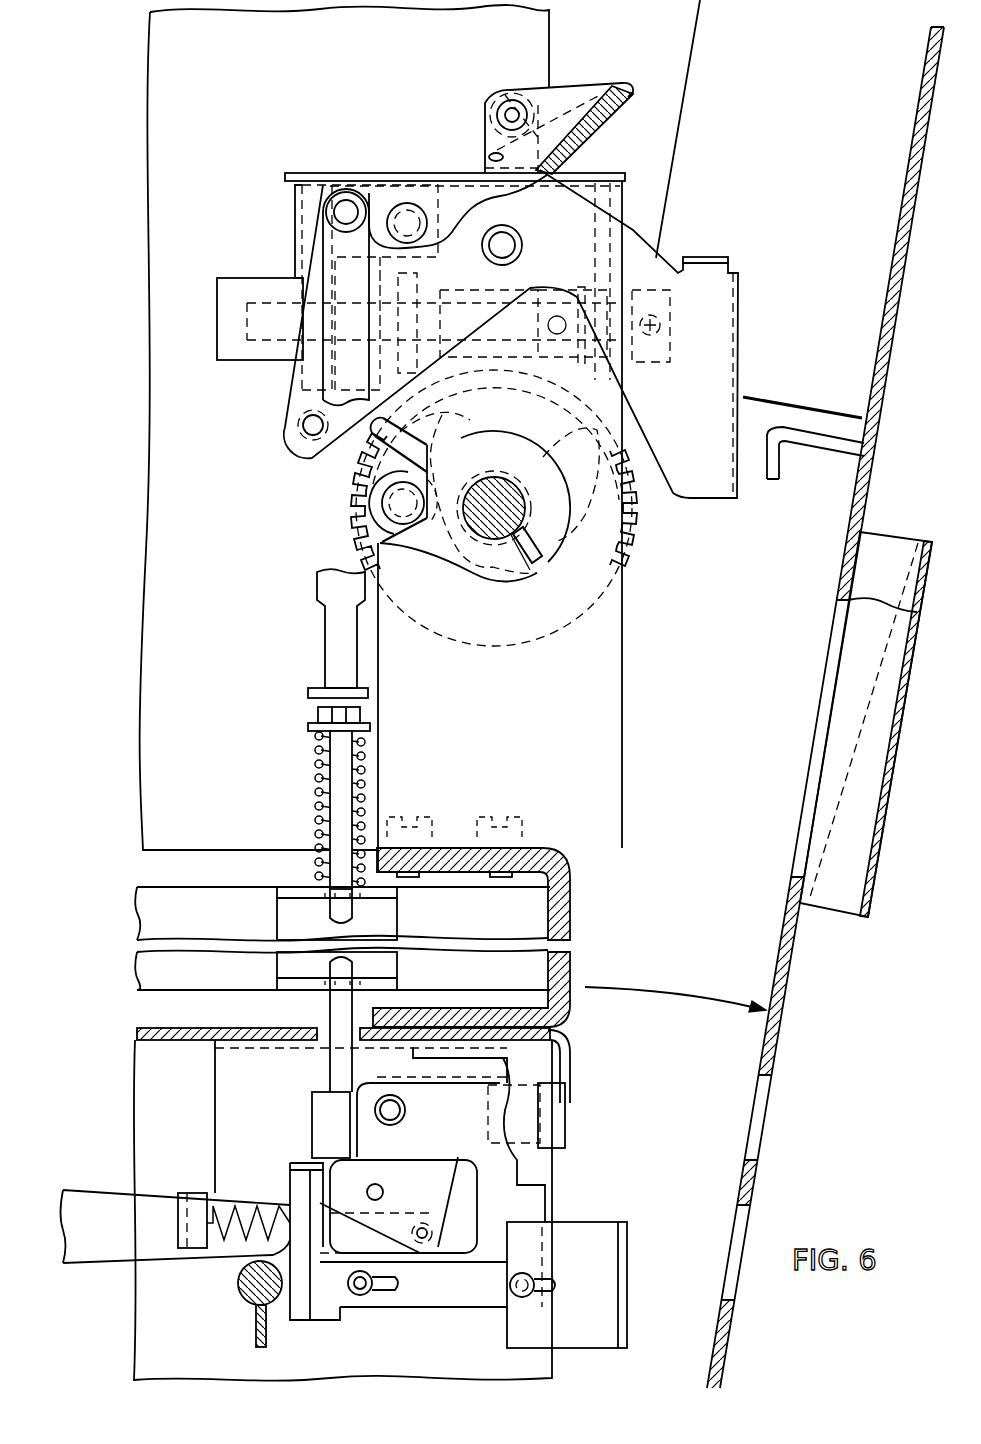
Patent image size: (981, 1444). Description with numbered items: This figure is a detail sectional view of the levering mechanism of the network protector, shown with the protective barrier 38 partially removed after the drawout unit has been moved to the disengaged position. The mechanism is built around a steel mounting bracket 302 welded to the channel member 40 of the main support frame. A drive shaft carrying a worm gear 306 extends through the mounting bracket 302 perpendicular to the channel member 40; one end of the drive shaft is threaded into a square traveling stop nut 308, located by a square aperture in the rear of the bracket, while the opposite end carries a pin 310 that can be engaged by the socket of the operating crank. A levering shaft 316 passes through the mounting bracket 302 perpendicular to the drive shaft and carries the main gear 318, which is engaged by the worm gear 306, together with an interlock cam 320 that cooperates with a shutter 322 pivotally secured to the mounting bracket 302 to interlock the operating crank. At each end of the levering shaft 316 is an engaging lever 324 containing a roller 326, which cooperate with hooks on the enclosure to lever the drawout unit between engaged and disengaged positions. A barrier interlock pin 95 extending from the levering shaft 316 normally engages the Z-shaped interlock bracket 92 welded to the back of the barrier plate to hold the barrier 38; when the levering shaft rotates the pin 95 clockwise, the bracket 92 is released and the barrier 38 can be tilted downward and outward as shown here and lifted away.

The protective barrier 38 is at (870, 494).
The channel member 40 is at (572, 908).
The interlock bracket 92 is at (814, 412).
The barrier interlock pin 95 is at (530, 575).
The mounting bracket 302 is at (626, 173).
The worm gear 306 is at (482, 284).
The traveling stop nut 308 is at (258, 268).
The pin 310 is at (660, 320).
The levering shaft 316 is at (495, 472).
The main gear 318 is at (350, 528).
The interlock cam 320 is at (363, 472).
The shutter 322 is at (687, 498).
The engaging lever 324 is at (442, 578).
The roller 326 is at (362, 495).